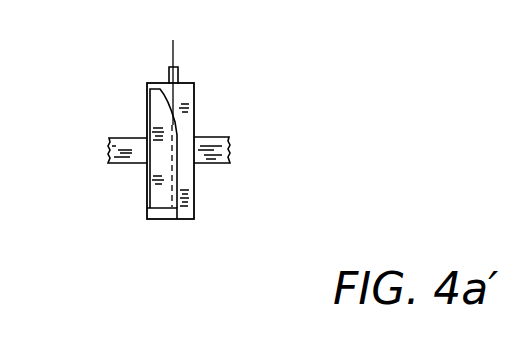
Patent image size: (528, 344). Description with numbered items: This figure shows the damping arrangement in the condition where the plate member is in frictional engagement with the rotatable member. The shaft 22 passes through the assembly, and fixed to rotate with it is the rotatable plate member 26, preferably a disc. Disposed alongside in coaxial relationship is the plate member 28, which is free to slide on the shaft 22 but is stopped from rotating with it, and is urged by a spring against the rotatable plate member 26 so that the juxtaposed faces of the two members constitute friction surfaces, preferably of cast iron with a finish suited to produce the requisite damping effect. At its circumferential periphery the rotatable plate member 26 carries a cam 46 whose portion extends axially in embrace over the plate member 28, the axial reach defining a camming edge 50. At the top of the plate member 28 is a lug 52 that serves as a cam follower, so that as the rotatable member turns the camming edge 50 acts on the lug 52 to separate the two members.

The shaft 22 is at (123, 146).
The rotatable plate member 26 is at (160, 211).
The plate member 28 is at (195, 97).
The cam 46 is at (157, 193).
The camming edge 50 is at (200, 137).
The lug 52 is at (173, 67).